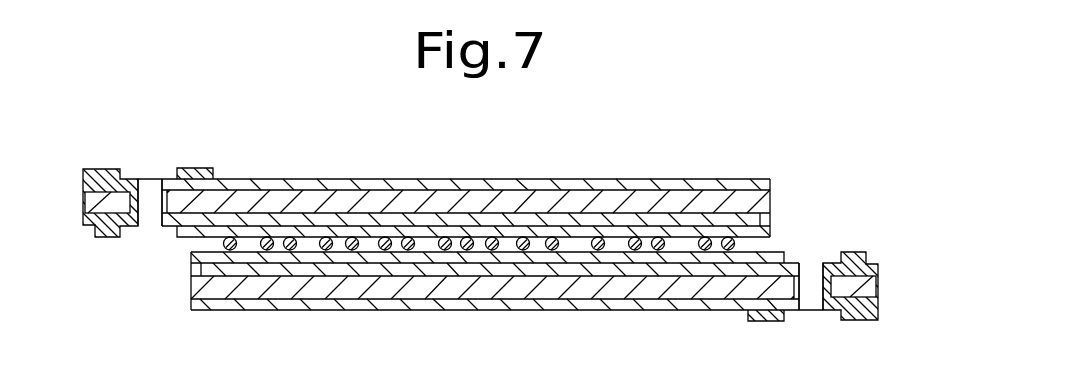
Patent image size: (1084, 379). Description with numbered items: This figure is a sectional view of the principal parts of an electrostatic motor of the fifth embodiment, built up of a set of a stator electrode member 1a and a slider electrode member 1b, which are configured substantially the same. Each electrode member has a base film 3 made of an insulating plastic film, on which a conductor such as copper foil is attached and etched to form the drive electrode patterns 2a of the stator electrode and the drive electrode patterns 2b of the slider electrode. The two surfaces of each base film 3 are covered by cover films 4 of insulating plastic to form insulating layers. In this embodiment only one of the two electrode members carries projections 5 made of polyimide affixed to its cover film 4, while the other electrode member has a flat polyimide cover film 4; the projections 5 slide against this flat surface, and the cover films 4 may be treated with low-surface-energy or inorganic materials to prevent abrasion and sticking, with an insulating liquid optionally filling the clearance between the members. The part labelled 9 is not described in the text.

The stator electrode member 1a is at (640, 315).
The slider electrode member 1b is at (648, 170).
The drive electrode patterns of the stator electrode 2a is at (576, 268).
The drive electrode patterns of the slider electrode 2b is at (580, 214).
The base film 3 is at (502, 200).
The cover film 4 is at (310, 187).
The projections 5 is at (292, 246).
The fastening screw 9 is at (151, 189).